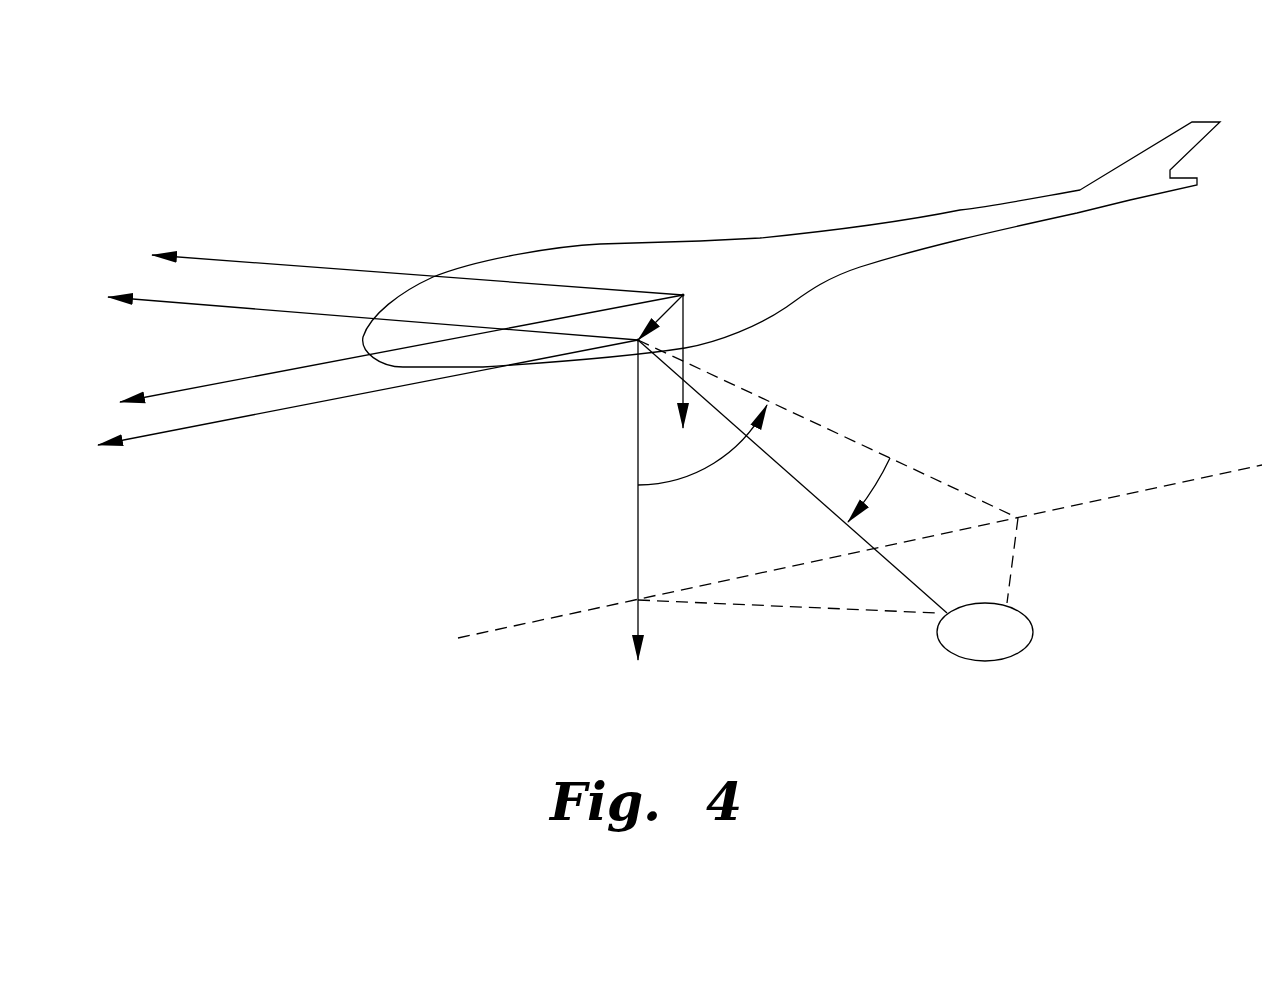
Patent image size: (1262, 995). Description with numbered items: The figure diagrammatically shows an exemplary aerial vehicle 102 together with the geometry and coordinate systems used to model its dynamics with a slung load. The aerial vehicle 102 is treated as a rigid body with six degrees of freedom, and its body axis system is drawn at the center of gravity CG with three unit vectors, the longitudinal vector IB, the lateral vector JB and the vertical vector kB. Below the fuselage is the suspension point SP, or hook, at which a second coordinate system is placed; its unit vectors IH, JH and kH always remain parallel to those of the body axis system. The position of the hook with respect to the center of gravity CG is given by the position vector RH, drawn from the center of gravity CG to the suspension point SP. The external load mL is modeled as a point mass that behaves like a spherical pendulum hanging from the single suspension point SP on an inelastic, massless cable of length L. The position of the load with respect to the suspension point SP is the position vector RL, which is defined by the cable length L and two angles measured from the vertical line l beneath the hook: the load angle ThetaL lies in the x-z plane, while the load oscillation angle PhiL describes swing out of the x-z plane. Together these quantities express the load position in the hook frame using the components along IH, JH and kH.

The aerial vehicle 102 is at (596, 244).
The center of gravity CG is at (683, 295).
The suspension point SP is at (637, 340).
The position vector of the hook RH is at (684, 300).
The position vector of the load RL is at (719, 411).
The body axis j unit vector JB is at (397, 268).
The body axis i unit vector IB is at (389, 357).
The body axis k unit vector kB is at (676, 382).
The hook coordinate system j unit vector JH is at (357, 318).
The hook coordinate system i unit vector IH is at (356, 405).
The hook coordinate system k unit vector kH is at (660, 517).
The load oscillation angle PhiL is at (702, 464).
The load angle ThetaL is at (855, 490).
The cable length L is at (792, 476).
The vertical reference line l is at (625, 470).
The external load mL is at (1023, 653).